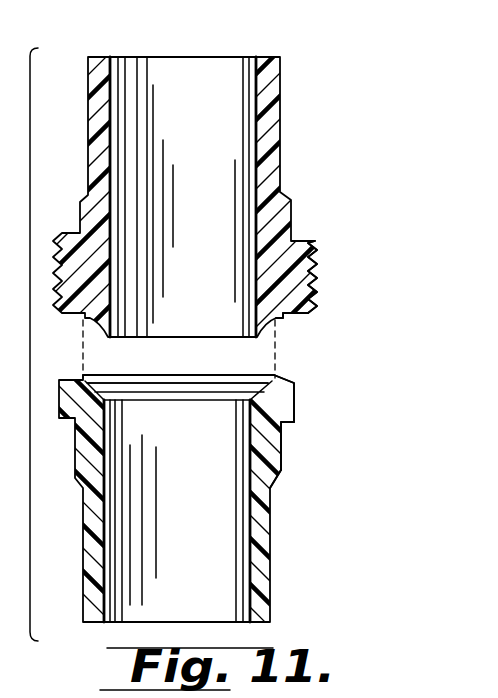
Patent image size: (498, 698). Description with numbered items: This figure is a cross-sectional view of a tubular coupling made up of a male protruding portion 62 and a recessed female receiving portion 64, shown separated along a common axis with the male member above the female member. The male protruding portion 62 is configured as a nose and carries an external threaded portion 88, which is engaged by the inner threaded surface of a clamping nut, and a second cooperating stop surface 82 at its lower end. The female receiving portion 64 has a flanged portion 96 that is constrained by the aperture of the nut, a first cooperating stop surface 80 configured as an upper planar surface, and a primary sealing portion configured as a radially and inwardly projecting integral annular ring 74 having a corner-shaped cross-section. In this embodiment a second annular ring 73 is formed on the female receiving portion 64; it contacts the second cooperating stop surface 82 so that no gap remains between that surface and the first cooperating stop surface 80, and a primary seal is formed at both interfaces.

The male protruding portion 62 is at (282, 153).
The threaded portion 88 is at (316, 273).
The second cooperating stop surface 82 is at (305, 318).
The second annular ring 73 is at (281, 380).
The first cooperating stop surface 80 is at (293, 383).
The annular ring 74 is at (290, 423).
The flanged portion 96 is at (284, 425).
The female receiving portion 64 is at (270, 545).